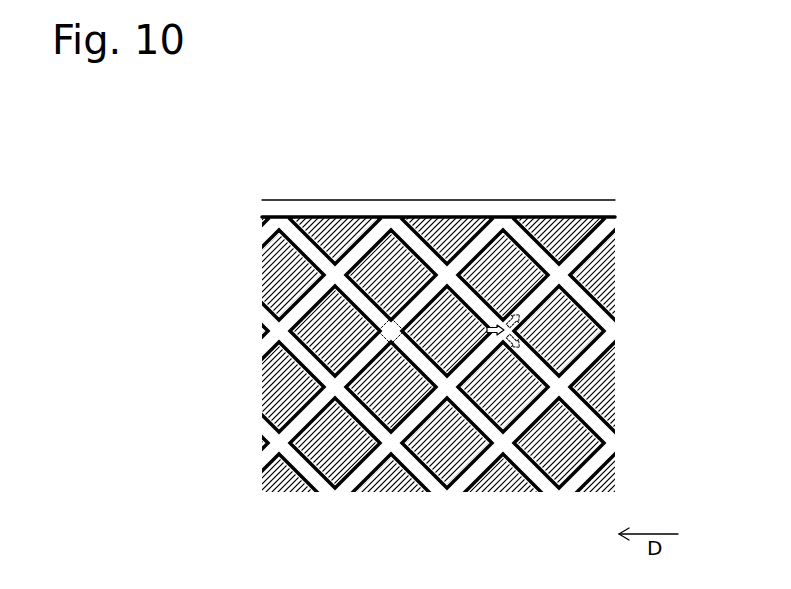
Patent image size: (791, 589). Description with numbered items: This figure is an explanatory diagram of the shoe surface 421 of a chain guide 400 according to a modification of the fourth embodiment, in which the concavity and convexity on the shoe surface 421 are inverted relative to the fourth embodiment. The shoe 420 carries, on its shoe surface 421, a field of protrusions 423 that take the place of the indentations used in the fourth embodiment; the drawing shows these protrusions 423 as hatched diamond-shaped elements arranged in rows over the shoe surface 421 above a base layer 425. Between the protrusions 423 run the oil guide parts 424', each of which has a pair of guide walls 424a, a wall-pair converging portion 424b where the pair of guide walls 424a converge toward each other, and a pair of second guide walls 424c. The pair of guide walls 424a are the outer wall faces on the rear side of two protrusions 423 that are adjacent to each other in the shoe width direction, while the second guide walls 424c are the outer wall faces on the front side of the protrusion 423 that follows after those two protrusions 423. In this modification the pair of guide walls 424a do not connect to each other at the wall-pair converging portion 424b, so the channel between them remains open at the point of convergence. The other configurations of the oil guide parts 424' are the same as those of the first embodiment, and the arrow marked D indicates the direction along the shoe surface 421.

The chain guide 400 is at (668, 253).
The shoe 420 is at (130, 200).
The shoe surface 421 is at (455, 338).
The protrusion 423 is at (560, 330).
The guide wall 424a is at (403, 305).
The wall-pair converging portion 424b is at (393, 320).
The second guide wall 424c is at (442, 293).
The oil guide part 424' is at (467, 160).
The base 425 is at (338, 210).